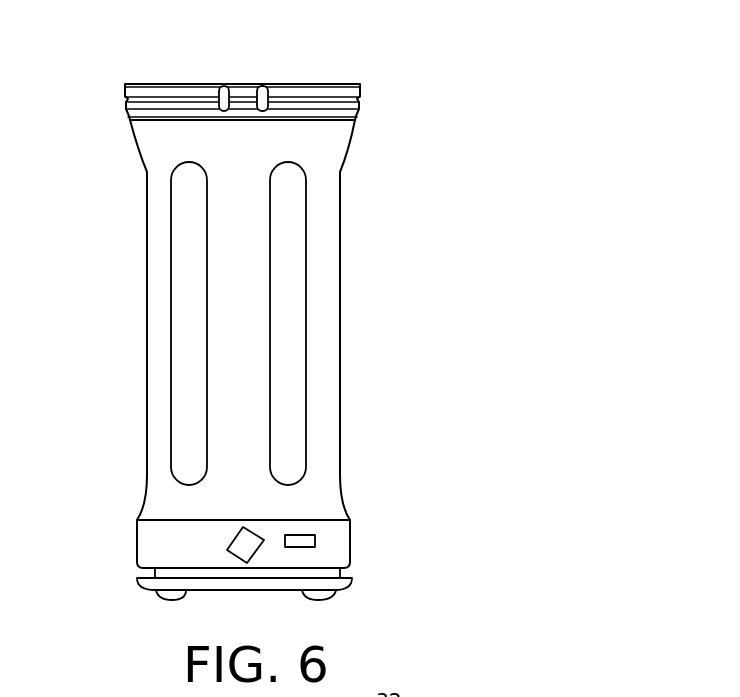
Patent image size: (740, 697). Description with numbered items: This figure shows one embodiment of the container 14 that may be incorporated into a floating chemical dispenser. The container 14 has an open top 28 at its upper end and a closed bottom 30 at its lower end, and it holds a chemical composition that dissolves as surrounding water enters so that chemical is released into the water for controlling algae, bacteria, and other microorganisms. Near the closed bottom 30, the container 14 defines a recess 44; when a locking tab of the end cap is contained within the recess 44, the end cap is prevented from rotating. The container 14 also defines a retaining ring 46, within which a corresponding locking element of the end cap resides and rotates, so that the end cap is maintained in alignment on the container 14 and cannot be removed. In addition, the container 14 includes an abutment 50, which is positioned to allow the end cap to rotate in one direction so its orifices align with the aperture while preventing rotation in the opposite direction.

The open top 28 is at (257, 67).
The container 14 is at (328, 317).
The abutment 50 is at (252, 528).
The recess 44 is at (307, 540).
The retaining ring 46 is at (157, 573).
The closed bottom 30 is at (320, 599).